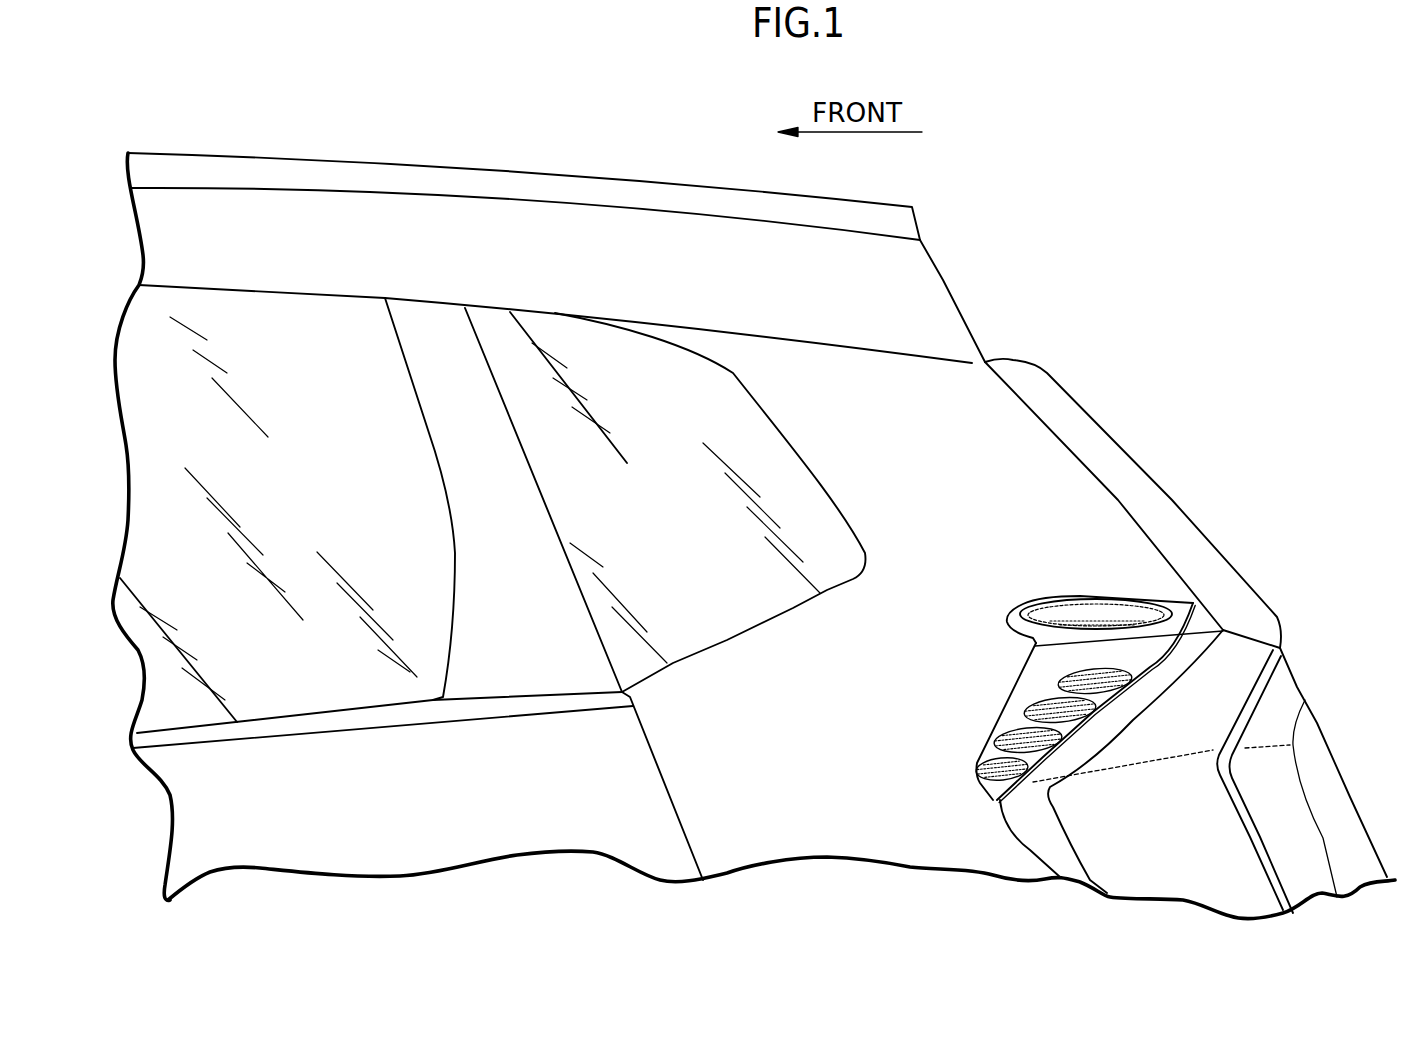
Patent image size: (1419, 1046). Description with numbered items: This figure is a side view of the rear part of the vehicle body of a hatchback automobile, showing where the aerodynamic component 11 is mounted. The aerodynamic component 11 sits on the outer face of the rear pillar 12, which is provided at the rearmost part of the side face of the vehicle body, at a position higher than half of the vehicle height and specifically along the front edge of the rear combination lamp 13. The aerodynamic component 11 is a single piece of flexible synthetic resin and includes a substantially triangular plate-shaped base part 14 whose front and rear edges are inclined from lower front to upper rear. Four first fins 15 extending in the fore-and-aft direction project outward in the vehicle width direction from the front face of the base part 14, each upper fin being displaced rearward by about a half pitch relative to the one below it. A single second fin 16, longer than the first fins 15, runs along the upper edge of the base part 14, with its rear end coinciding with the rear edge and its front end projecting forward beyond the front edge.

The aerodynamic component 11 is at (1033, 675).
The rear pillar 12 is at (1080, 487).
The rear combination lamp 13 is at (1248, 630).
The base part 14 is at (1040, 670).
The first fins 15 is at (1100, 682).
The second fin 16 is at (1095, 610).